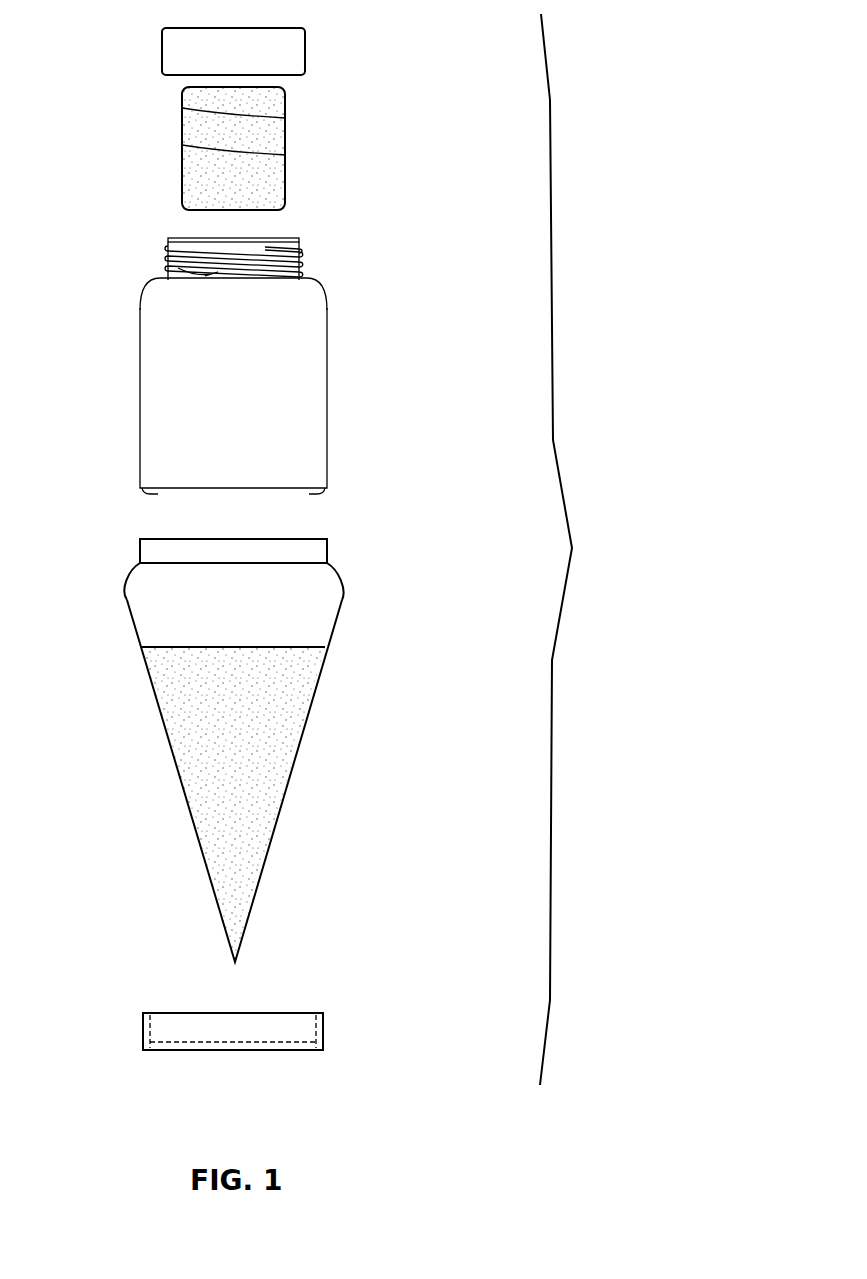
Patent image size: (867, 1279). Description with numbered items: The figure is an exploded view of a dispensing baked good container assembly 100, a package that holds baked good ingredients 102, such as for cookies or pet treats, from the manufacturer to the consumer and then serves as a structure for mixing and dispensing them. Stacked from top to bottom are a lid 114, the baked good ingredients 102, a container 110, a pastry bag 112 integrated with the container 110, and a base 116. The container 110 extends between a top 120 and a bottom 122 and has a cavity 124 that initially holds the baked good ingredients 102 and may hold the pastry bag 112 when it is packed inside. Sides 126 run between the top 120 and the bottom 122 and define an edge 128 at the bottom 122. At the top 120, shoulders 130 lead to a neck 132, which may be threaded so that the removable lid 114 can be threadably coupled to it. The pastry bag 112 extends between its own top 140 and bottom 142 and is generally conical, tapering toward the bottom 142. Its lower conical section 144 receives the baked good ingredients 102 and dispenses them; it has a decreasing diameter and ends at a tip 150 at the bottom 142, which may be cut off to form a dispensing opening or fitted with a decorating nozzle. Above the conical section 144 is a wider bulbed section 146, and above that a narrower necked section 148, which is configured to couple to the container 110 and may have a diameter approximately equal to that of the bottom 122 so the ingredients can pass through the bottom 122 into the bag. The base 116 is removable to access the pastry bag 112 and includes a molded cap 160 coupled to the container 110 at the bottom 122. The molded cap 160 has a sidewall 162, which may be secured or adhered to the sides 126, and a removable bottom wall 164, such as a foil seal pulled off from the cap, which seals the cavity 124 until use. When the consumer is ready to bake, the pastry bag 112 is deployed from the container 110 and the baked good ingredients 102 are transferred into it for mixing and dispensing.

The dispensing baked good container assembly 100 is at (417, 70).
The baked good ingredients 102 is at (325, 139).
The container 110 is at (257, 363).
The pastry bag 112 is at (247, 754).
The lid 114 is at (325, 50).
The base 116 is at (249, 1061).
The top 120 is at (302, 237).
The bottom 122 is at (315, 492).
The cavity 124 is at (186, 236).
The sides 126 is at (140, 403).
The edge 128 is at (155, 492).
The shoulders 130 is at (147, 280).
The neck 132 is at (222, 270).
The top 140 is at (229, 754).
The bottom 142 is at (241, 966).
The conical section 144 is at (278, 823).
The bulbed section 146 is at (127, 605).
The necked section 148 is at (140, 551).
The tip 150 is at (232, 960).
The molded cap 160 is at (143, 1030).
The sidewall 162 is at (313, 1030).
The removable bottom wall 164 is at (207, 1043).